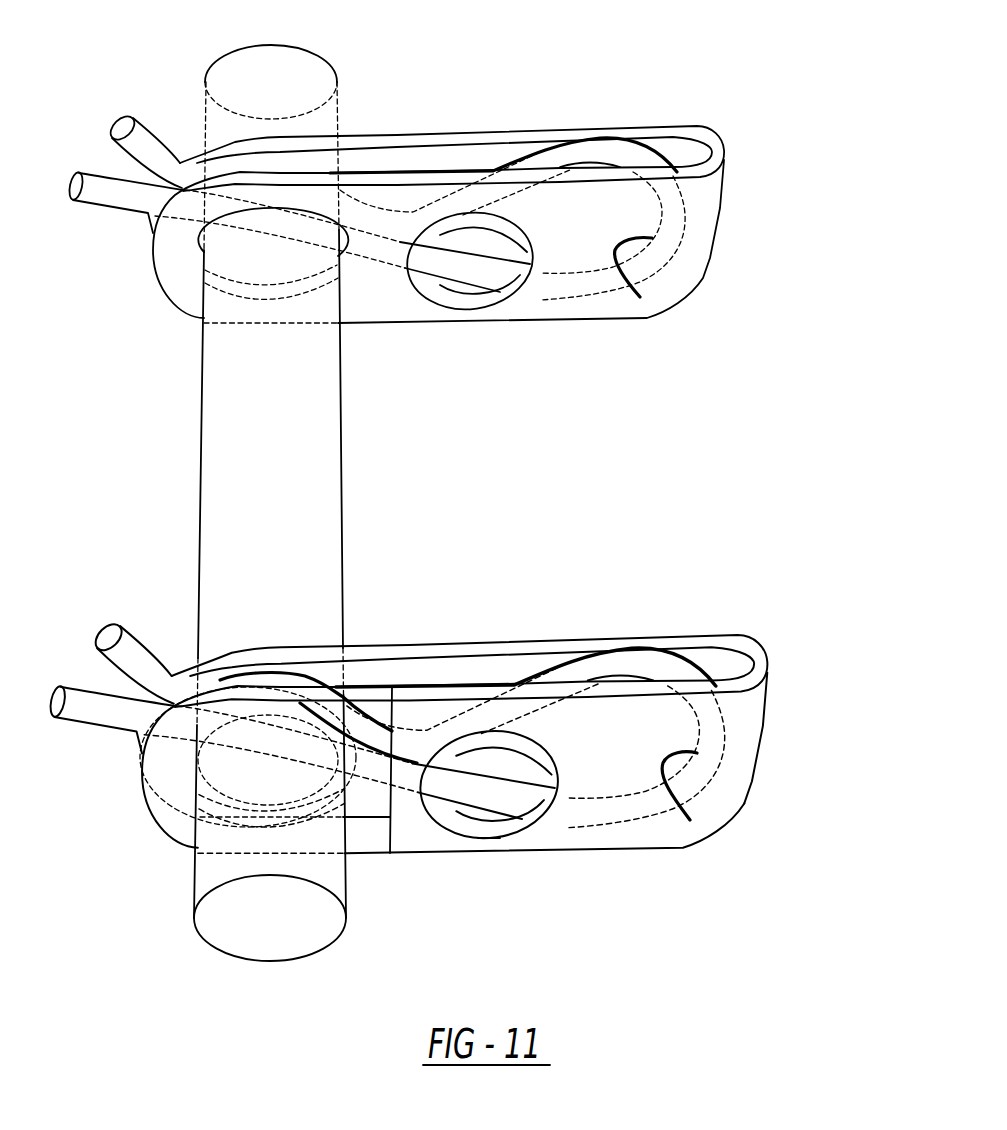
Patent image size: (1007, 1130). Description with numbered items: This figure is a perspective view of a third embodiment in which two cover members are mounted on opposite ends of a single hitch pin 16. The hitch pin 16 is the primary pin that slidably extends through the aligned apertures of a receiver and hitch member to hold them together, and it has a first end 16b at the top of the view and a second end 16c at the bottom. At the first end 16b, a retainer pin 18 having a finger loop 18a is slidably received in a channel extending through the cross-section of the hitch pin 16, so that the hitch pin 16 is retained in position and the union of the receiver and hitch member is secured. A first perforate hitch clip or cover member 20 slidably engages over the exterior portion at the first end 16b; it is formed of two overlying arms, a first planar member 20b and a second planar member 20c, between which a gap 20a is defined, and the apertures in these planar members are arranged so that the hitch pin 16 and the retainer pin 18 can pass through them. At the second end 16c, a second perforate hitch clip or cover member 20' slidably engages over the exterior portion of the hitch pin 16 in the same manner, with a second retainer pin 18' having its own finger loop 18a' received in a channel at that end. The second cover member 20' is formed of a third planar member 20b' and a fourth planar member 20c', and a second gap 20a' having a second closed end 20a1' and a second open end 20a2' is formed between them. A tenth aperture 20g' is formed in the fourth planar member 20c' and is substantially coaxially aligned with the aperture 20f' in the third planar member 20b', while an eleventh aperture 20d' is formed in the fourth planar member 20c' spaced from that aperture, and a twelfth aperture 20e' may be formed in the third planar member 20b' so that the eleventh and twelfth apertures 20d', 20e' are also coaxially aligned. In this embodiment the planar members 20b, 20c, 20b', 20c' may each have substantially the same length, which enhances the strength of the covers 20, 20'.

The hitch pin 16 is at (342, 430).
The first end 16b is at (342, 113).
The second end 16c is at (347, 873).
The retainer pin 18 is at (420, 155).
The finger loop 18a is at (684, 334).
The cover member 20 is at (477, 109).
The gap 20a is at (389, 164).
The first planar member 20b is at (504, 253).
The second planar member 20c is at (472, 187).
The second cover member 20' is at (497, 622).
The second gap 20a' is at (401, 678).
The second closed end 20a1' is at (796, 738).
The second open end 20a2' is at (314, 696).
The third planar member 20b' is at (471, 872).
The fourth planar member 20c' is at (529, 665).
The eleventh aperture 20d' is at (244, 852).
The twelfth aperture 20e' is at (204, 821).
The aperture 20f' is at (495, 885).
The tenth aperture 20g' is at (503, 845).
The tie strap 18' is at (438, 682).
The tie strap end 18a' is at (713, 845).